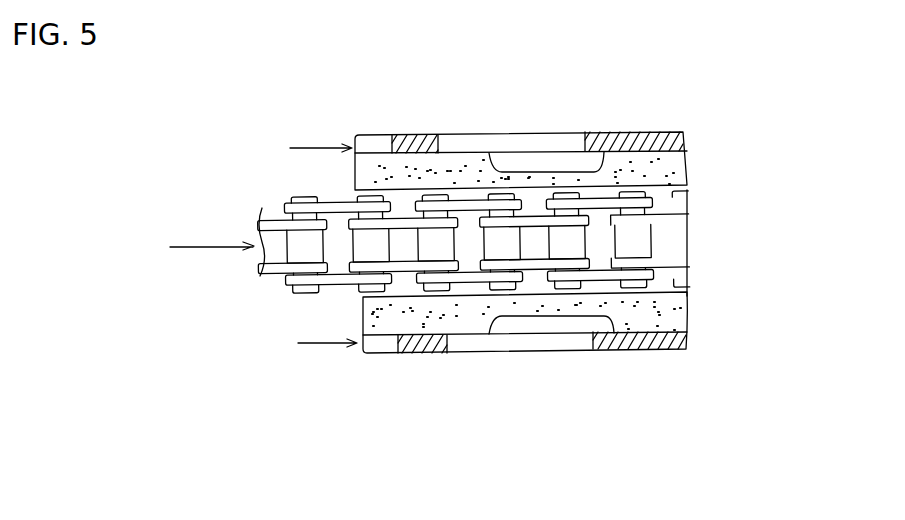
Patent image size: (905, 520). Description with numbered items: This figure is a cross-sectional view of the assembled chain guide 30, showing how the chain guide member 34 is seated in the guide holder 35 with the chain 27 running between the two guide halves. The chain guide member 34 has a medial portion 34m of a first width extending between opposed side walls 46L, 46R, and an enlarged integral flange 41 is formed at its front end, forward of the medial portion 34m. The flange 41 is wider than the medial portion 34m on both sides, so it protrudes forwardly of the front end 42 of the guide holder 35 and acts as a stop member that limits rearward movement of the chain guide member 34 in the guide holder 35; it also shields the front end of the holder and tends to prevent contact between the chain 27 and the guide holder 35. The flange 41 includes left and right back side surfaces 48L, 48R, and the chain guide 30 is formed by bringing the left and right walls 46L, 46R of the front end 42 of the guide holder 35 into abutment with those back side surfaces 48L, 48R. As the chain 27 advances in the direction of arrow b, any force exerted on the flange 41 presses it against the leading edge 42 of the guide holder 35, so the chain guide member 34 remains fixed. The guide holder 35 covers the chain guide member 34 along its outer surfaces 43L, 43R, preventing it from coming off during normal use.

The chain 27 is at (265, 292).
The chain guide 30 is at (735, 78).
The chain guide member 34 is at (687, 305).
The medial portion 34m is at (645, 333).
The guide holder 35 is at (428, 135).
The flange 41 is at (355, 136).
The front end of the guide holder 42 is at (392, 135).
The right outer surface 43R is at (483, 132).
The left outer surface 43L is at (467, 336).
The right side wall 46R is at (392, 152).
The left side wall 46L is at (398, 336).
The right back side surface 48R is at (418, 134).
The left back side surface 48L is at (418, 353).